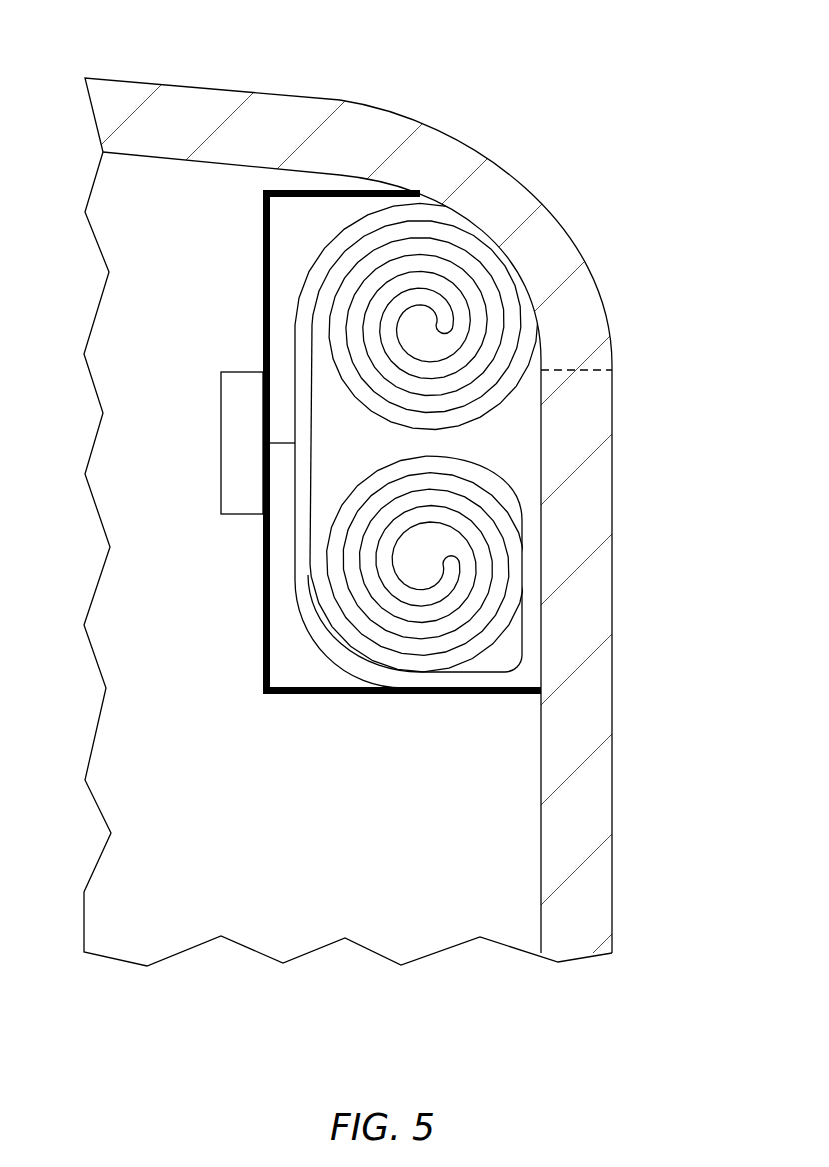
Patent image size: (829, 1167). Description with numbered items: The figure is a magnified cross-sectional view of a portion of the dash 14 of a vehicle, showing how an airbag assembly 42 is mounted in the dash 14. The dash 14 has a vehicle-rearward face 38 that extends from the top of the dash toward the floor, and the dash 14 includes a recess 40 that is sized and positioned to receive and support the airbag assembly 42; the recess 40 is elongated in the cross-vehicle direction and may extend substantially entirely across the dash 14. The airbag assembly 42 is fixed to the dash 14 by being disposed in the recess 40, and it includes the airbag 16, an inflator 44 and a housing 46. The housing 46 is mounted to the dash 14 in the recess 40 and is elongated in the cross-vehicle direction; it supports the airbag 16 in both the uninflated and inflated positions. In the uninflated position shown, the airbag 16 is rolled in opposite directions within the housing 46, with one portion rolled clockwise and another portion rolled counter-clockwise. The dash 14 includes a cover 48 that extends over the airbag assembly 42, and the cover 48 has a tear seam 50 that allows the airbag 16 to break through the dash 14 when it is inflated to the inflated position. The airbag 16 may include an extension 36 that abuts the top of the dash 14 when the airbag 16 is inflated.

The dash 14 is at (647, 838).
The airbag 16 is at (500, 415).
The extension 36 is at (195, 85).
The vehicle-rearward face 38 is at (615, 777).
The recess 40 is at (527, 677).
The airbag assembly 42 is at (275, 725).
The inflator 44 is at (221, 422).
The housing 46 is at (263, 608).
The cover 48 is at (572, 215).
The tear seam 50 is at (592, 372).